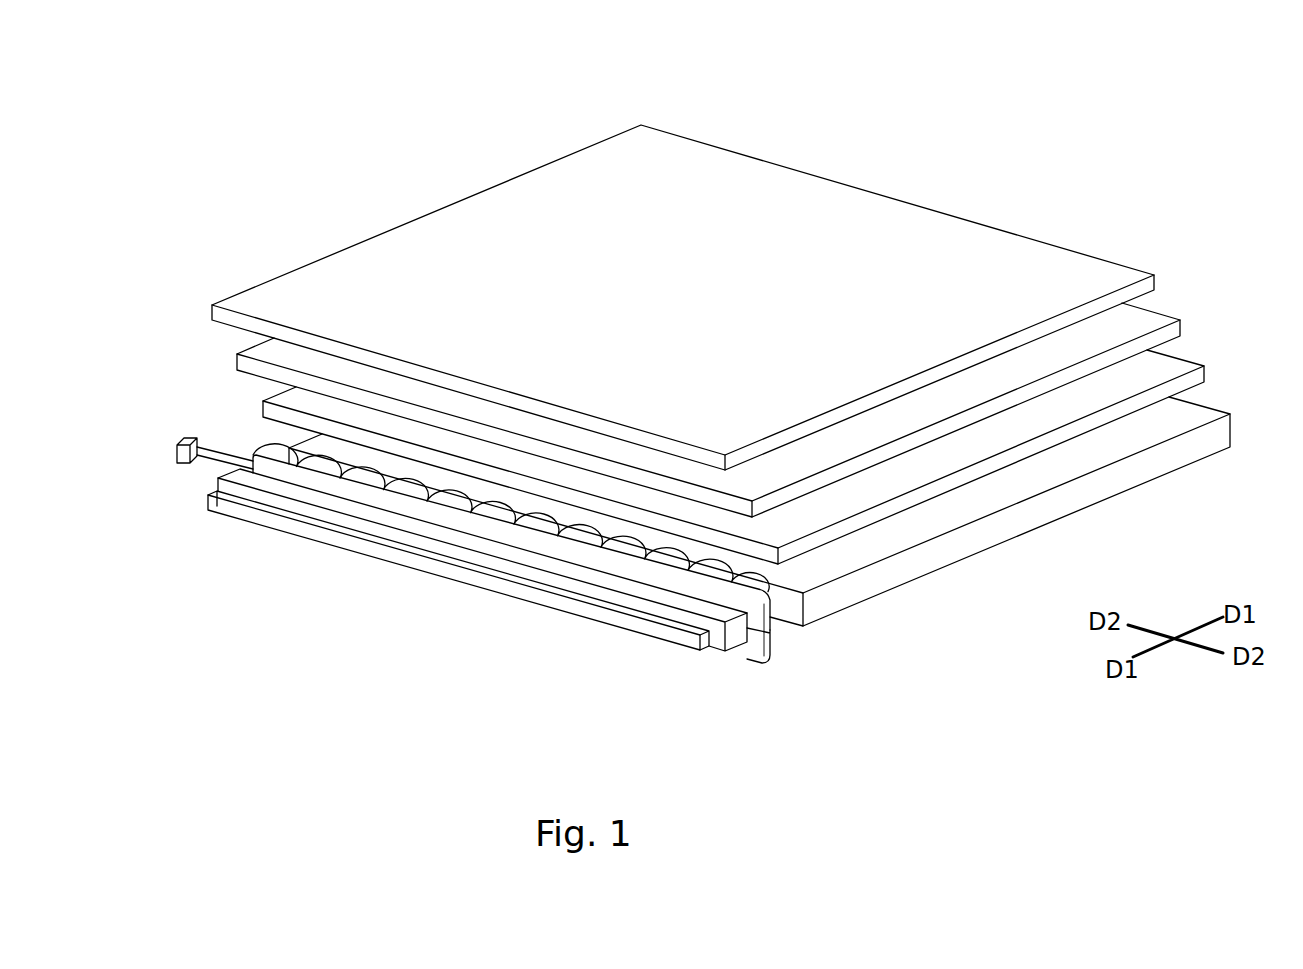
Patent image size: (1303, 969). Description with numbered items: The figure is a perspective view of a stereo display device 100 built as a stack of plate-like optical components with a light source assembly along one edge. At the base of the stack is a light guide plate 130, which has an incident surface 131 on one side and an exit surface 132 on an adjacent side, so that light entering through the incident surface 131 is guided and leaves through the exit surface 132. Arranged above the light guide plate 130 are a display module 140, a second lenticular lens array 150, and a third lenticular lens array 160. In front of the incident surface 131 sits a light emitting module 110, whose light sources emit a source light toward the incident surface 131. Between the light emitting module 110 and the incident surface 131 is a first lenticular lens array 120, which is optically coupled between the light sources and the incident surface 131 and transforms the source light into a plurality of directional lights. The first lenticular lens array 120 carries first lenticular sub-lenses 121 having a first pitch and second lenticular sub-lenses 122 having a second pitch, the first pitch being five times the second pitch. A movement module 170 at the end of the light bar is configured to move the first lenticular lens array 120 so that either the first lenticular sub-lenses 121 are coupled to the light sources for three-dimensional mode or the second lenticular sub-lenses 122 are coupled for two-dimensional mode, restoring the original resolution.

The stereo display device 100 is at (184, 90).
The light emitting module 110 is at (588, 612).
The first lenticular lens array 120 is at (593, 593).
The first lenticular sub-lenses 121 is at (772, 645).
The second lenticular sub-lenses 122 is at (772, 618).
The light guide plate 130 is at (759, 533).
The incident surface 131 is at (793, 611).
The exit surface 132 is at (917, 527).
The display module 140 is at (1181, 324).
The second lenticular lens array 150 is at (1206, 370).
The third lenticular lens array 160 is at (1155, 281).
The movement module 170 is at (176, 452).